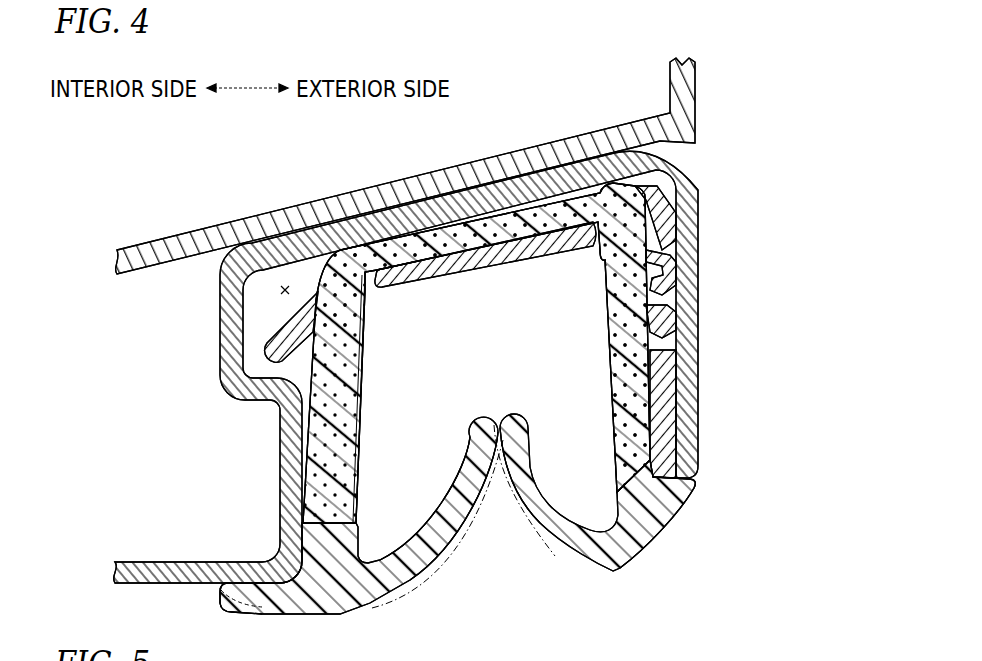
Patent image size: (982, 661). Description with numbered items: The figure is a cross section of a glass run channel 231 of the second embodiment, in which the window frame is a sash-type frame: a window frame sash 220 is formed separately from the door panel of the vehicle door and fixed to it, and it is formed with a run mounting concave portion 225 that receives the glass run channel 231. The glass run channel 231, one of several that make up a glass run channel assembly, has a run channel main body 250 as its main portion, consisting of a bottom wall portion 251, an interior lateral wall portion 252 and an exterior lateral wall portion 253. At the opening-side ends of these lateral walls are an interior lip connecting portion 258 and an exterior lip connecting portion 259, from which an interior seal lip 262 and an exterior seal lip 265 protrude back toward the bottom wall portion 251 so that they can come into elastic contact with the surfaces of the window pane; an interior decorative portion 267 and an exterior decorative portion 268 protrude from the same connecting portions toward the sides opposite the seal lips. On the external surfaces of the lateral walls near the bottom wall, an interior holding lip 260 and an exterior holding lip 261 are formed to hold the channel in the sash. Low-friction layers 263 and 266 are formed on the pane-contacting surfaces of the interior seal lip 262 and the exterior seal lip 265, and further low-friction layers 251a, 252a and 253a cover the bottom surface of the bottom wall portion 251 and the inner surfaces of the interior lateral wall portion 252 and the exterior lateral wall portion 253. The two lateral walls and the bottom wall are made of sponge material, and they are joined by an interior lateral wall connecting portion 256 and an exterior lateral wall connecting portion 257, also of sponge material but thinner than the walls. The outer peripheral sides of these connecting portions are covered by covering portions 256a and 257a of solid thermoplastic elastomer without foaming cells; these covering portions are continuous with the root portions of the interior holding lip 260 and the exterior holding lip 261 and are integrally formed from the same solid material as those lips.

The window frame sash 220 is at (700, 223).
The run mounting concave portion 225 is at (287, 286).
The glass run channel 231 is at (400, 598).
The run channel main body 250 is at (308, 366).
The bottom wall portion 251 is at (470, 230).
The low-friction layer 251a is at (470, 276).
The interior lateral wall portion 252 is at (311, 433).
The low-friction layer 252a is at (361, 392).
The exterior lateral wall portion 253 is at (670, 375).
The low-friction layer 253a is at (612, 363).
The interior lateral wall connecting portion 256 is at (363, 260).
The covering portion 256a is at (347, 257).
The exterior lateral wall connecting portion 257 is at (607, 193).
The covering portion 257a is at (640, 215).
The interior lip connecting portion 258 is at (333, 570).
The exterior lip connecting portion 259 is at (640, 497).
The interior holding lip 260 is at (272, 342).
The exterior holding lip 261 is at (672, 300).
The interior seal lip 262 is at (410, 557).
The low-friction layer 263 is at (447, 563).
The exterior seal lip 265 is at (550, 500).
The low-friction layer 266 is at (533, 497).
The interior decorative portion 267 is at (243, 587).
The exterior decorative portion 268 is at (676, 487).